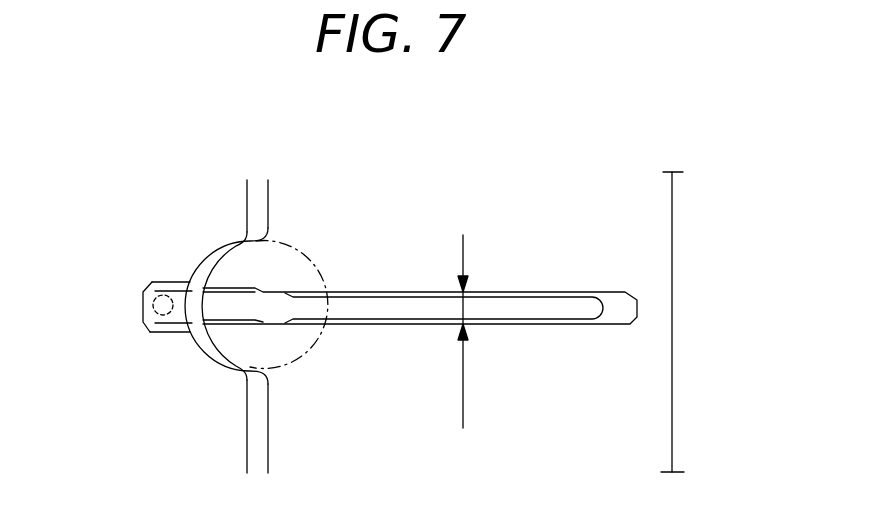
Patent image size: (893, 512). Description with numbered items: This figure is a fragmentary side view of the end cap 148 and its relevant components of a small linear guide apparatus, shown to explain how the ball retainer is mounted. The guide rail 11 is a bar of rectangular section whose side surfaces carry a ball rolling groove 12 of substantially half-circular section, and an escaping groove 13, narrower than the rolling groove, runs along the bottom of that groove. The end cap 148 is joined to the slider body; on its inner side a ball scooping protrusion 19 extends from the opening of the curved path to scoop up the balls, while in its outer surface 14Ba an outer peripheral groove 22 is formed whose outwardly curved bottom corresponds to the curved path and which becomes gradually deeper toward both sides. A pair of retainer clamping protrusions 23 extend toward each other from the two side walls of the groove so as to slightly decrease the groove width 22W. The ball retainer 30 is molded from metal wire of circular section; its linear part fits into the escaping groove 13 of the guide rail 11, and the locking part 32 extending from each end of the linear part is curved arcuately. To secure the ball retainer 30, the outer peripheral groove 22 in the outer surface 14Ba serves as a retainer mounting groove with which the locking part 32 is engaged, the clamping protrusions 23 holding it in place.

The guide rail 11 is at (193, 453).
The ball rolling groove 12 is at (215, 258).
The escaping groove 13 is at (143, 290).
The ball scooping protrusion 19 is at (223, 333).
The outer peripheral groove 22 is at (634, 297).
The groove width 22W is at (498, 331).
The retainer clamping protrusion 23 is at (284, 291).
The ball retainer 30 is at (170, 301).
The locking part 32 is at (562, 308).
The end cap 148 is at (473, 381).
The outer surface of end cap 14Ba is at (628, 235).